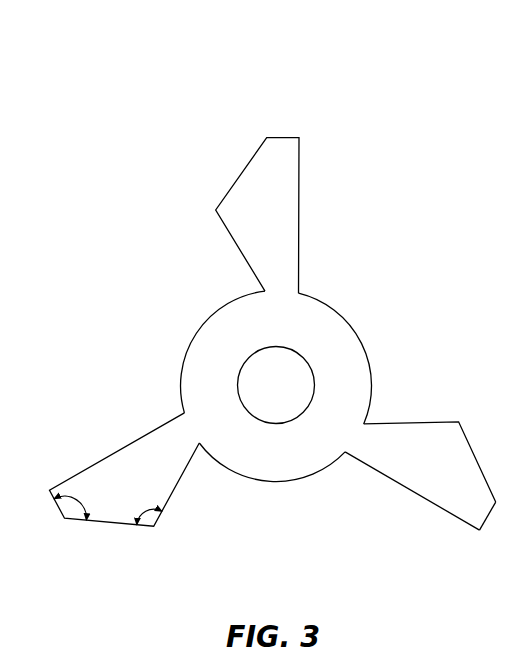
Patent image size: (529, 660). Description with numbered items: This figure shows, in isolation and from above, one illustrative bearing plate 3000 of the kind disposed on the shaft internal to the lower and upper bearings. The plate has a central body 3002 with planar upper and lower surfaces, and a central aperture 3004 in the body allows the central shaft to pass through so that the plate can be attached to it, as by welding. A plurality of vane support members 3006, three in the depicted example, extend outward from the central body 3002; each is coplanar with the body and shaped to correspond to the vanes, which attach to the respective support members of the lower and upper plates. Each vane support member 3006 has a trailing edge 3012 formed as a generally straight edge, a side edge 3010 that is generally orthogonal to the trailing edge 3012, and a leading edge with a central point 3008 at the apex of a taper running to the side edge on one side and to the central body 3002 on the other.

The bearing plate 3000 is at (288, 366).
The central body 3002 is at (212, 364).
The central aperture 3004 is at (265, 378).
The vane support member 3006 is at (277, 195).
The central point 3008 is at (459, 421).
The side edge 3010 is at (490, 512).
The trailing edge 3012 is at (398, 487).